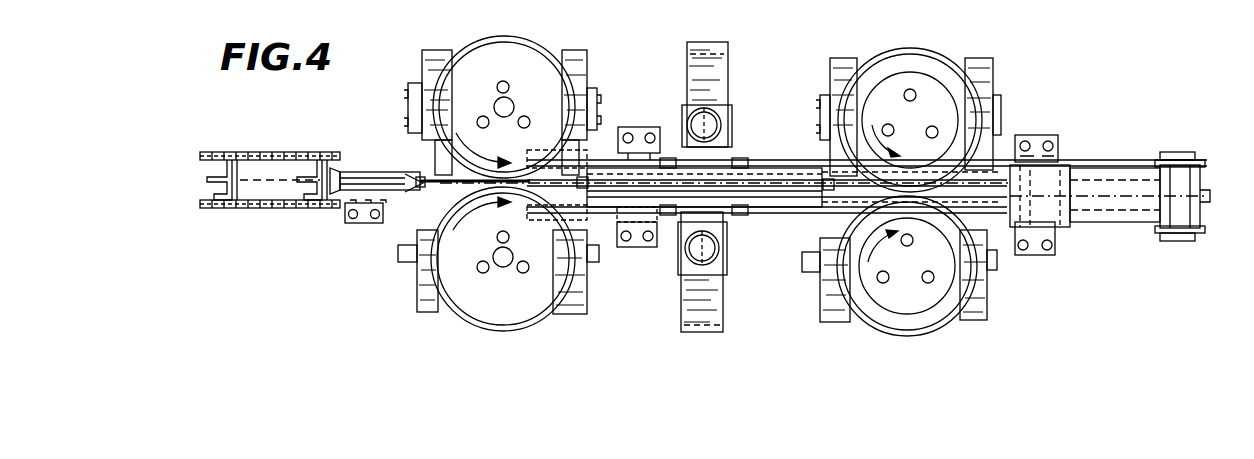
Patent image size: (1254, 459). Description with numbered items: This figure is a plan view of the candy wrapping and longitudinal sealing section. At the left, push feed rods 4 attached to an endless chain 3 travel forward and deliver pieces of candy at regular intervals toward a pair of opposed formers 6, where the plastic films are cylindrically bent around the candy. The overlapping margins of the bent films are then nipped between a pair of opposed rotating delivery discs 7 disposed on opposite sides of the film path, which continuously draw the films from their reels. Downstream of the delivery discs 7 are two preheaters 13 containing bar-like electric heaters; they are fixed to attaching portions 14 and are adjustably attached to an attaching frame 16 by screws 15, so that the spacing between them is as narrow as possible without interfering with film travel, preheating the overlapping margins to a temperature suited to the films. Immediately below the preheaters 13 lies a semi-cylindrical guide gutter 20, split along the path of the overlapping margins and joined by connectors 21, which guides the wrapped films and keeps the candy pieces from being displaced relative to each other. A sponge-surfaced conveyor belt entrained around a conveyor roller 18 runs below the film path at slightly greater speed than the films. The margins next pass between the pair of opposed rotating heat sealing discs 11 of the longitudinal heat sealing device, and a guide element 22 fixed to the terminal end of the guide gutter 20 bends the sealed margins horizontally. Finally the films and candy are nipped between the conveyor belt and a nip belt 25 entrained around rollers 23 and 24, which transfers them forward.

The endless chain 3 is at (252, 168).
The push feed rods 4 is at (220, 156).
The formers 6 is at (364, 173).
The delivery discs 7 is at (540, 50).
The heat sealing discs 11 is at (939, 66).
The preheaters 13 is at (782, 172).
The attaching portions 14 is at (742, 118).
The screws 15 is at (687, 122).
The attaching frame 16 is at (694, 76).
The conveyor roller 18 is at (555, 195).
The guide gutter 20 is at (568, 150).
The connectors 21 is at (585, 176).
The guide element 22 is at (1004, 165).
The roller 23 is at (1034, 254).
The roller 24 is at (1199, 198).
The nip belt 25 is at (1117, 222).